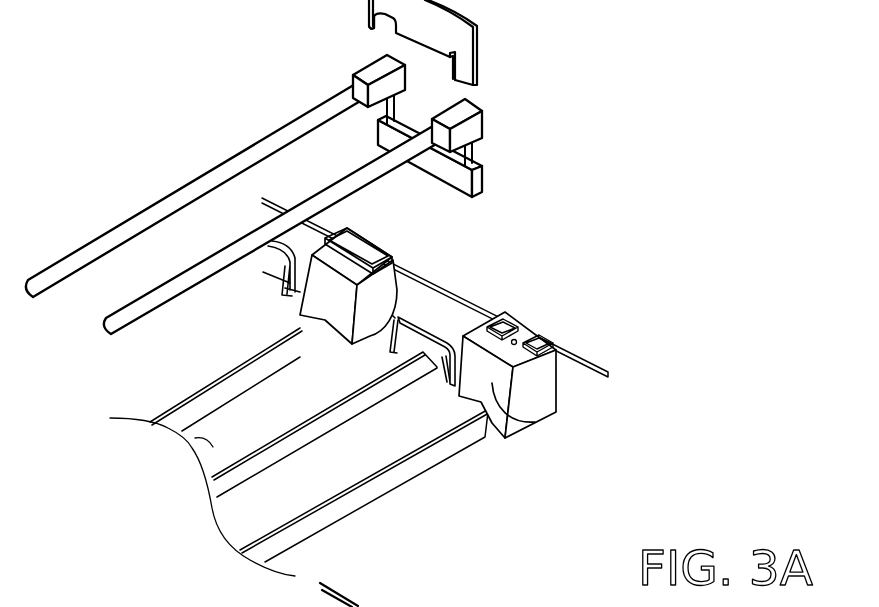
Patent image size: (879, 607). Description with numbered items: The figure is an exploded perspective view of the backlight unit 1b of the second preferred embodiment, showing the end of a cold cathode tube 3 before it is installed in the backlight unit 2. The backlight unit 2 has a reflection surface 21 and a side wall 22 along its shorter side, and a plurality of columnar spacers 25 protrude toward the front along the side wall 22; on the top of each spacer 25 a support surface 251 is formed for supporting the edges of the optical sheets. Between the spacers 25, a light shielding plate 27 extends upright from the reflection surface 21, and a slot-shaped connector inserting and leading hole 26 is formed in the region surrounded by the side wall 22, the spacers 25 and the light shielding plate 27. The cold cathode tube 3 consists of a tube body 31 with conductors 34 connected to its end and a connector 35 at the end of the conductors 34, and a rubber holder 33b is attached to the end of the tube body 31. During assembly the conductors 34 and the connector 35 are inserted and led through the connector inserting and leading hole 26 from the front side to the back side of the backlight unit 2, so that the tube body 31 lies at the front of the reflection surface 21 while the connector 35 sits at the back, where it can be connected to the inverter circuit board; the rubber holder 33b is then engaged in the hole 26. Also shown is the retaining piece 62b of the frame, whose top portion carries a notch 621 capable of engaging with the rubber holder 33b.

The backlight unit 1b is at (668, 487).
The backlight unit 2 is at (455, 488).
The reflection surface 21 is at (190, 441).
The side wall 22 is at (583, 356).
The columnar spacer 25 is at (449, 349).
The support surface 251 is at (503, 358).
The connector inserting and leading hole 26 is at (397, 313).
The light shielding plate 27 is at (435, 332).
The cold cathode tube 3 is at (307, 194).
The tube body 31 is at (192, 180).
The rubber holder 33b is at (473, 96).
The conductor 34 is at (478, 152).
The connector 35 is at (481, 181).
The retaining piece 62b is at (422, 303).
The notch 621 is at (370, 35).